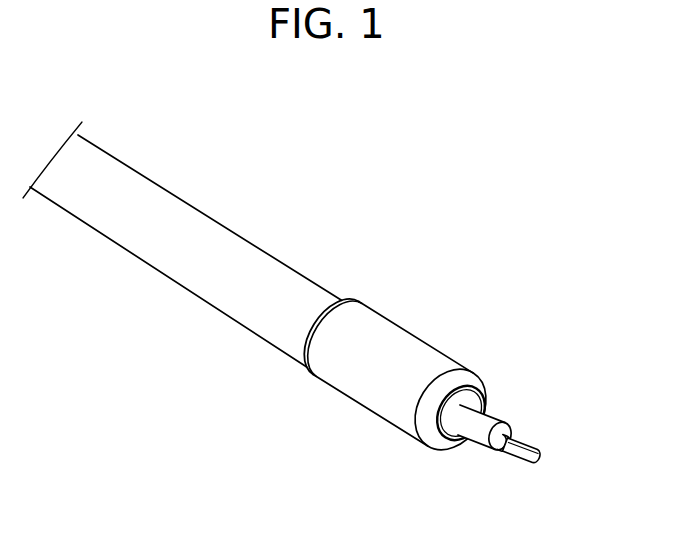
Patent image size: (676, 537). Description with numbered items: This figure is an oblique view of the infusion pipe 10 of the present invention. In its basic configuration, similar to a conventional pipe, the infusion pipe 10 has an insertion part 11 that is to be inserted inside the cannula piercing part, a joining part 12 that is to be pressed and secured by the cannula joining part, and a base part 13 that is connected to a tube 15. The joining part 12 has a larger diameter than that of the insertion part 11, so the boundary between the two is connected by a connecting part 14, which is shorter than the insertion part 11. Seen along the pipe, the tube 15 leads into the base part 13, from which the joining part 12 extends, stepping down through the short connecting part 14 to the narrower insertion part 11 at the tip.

The infusion pipe 10 is at (443, 320).
The insertion part 11 is at (527, 455).
The joining part 12 is at (482, 420).
The base part 13 is at (373, 390).
The connecting part 14 is at (498, 445).
The tube 15 is at (210, 237).